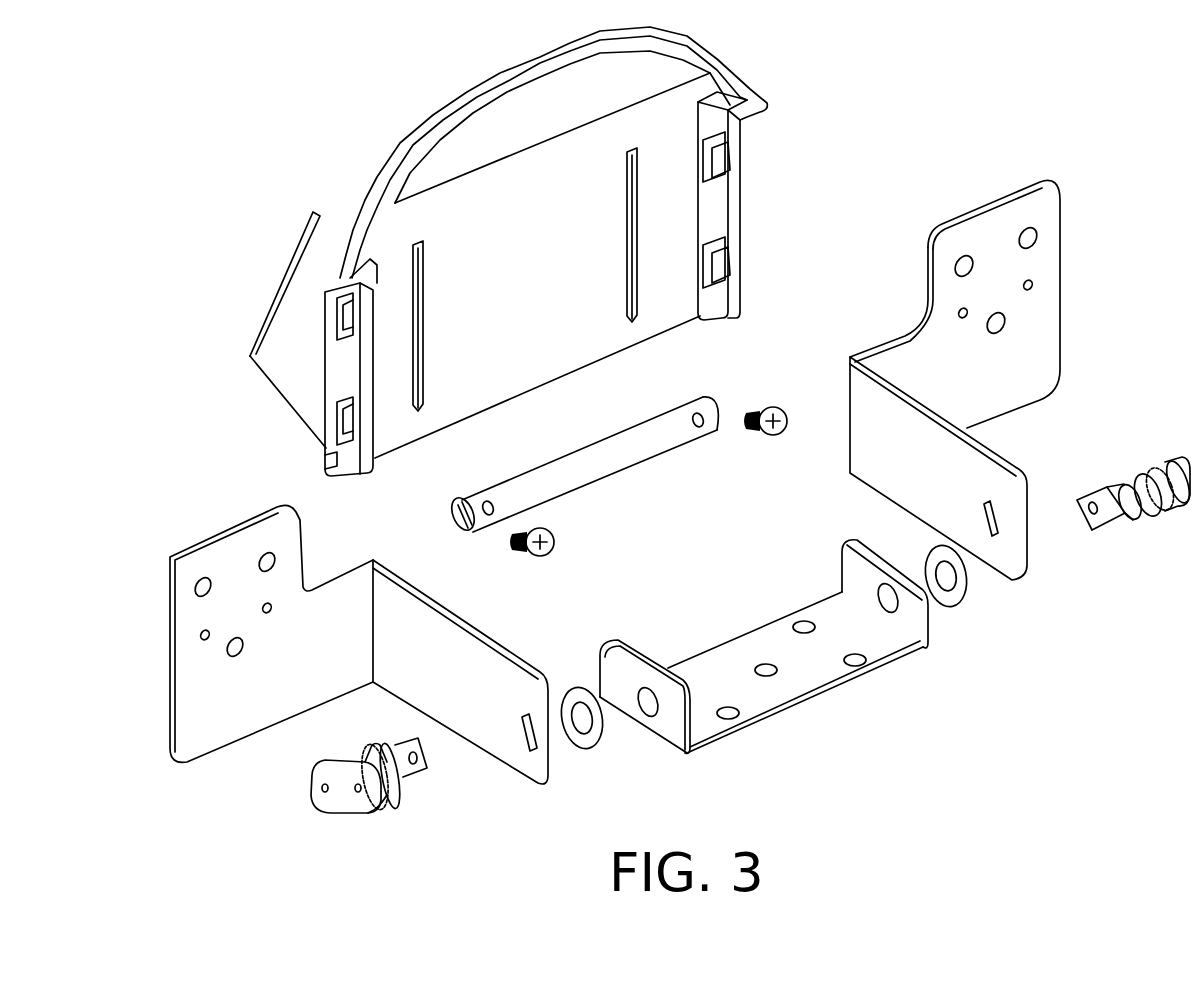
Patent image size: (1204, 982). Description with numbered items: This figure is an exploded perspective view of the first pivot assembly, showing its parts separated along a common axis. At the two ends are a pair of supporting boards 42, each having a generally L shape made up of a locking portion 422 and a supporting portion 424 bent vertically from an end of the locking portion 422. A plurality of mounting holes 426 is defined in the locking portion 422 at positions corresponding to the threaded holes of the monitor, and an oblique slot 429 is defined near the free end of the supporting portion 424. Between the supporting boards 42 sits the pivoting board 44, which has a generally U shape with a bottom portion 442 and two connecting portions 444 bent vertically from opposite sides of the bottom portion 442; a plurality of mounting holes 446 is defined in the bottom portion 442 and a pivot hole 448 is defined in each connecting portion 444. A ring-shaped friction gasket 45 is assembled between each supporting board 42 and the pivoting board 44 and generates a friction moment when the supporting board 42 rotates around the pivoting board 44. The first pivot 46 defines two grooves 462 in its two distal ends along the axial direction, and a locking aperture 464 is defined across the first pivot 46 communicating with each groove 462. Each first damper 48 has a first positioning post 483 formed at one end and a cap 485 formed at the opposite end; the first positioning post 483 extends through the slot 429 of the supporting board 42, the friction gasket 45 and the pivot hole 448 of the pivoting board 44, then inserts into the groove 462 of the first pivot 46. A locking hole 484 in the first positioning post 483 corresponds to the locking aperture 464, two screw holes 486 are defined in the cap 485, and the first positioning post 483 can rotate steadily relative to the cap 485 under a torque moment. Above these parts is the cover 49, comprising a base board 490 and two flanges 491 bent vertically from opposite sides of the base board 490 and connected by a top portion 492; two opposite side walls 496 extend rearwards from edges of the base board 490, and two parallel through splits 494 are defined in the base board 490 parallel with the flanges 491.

The supporting board 42 is at (975, 188).
The locking portion 422 is at (1037, 313).
The supporting portion 424 is at (875, 440).
The mounting holes 426 is at (1033, 243).
The oblique slot 429 is at (1000, 520).
The pivoting board 44 is at (896, 683).
The bottom portion 442 is at (808, 678).
The connecting portions 444 is at (618, 665).
The mounting holes 446 is at (733, 716).
The pivot hole 448 is at (646, 708).
The friction gasket 45 is at (576, 755).
The first pivot 46 is at (601, 459).
The grooves 462 is at (455, 512).
The locking aperture 464 is at (703, 425).
The first damper 48 is at (304, 812).
The first positioning post 483 is at (405, 781).
The locking hole 484 is at (426, 760).
The cap 485 is at (353, 800).
The screw holes 486 is at (321, 786).
The cover 49 is at (456, 80).
The base board 490 is at (520, 242).
The flanges 491 is at (350, 364).
The top portion 492 is at (382, 176).
The through splits 494 is at (420, 367).
The side walls 496 is at (297, 300).